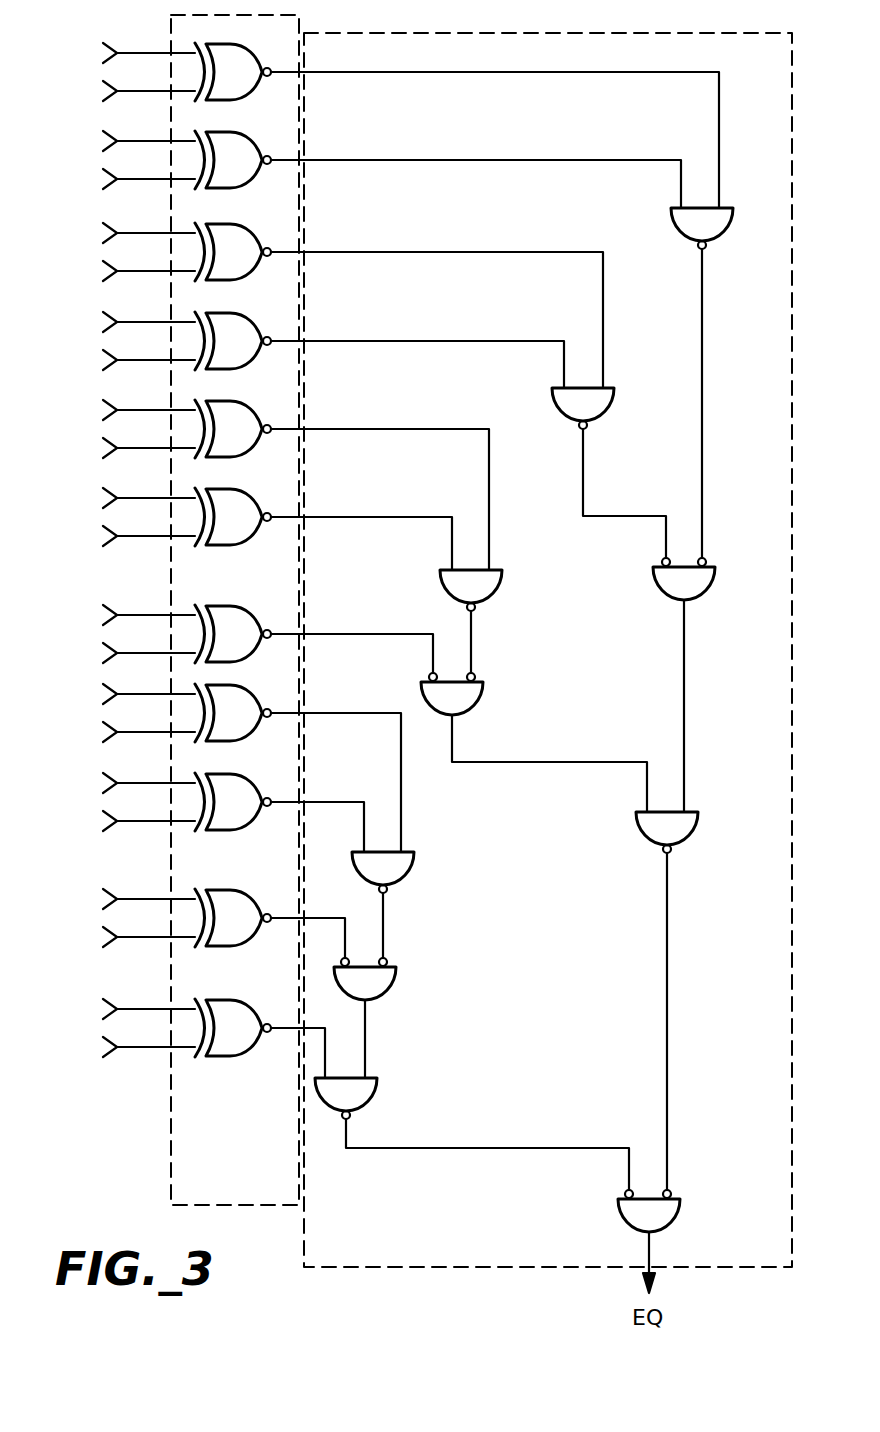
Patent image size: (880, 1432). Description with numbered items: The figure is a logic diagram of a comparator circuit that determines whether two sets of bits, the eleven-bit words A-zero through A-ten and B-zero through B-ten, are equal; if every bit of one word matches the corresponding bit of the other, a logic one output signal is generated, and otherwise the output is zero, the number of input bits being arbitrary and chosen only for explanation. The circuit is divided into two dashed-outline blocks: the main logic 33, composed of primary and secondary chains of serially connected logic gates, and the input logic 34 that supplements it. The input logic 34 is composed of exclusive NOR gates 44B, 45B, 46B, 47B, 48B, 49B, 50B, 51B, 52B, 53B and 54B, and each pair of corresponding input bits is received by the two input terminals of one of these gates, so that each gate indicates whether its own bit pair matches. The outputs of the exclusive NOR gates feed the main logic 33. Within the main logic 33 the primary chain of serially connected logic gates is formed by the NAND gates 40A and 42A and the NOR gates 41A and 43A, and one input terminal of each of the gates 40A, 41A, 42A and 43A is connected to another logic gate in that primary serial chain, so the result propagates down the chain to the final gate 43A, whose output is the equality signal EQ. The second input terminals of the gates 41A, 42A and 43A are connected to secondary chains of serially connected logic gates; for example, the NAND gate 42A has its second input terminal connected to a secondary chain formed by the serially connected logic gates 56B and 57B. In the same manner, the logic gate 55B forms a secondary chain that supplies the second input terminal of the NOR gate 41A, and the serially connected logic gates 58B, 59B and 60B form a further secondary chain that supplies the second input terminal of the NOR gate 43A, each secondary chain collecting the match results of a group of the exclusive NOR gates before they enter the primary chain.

The main logic 33 is at (720, 1268).
The input logic 34 is at (168, 38).
The exclusive NOR gate 44B is at (394, 124).
The exclusive NOR gate 45B is at (375, 172).
The exclusive NOR gate 46B is at (336, 304).
The exclusive NOR gate 47B is at (317, 353).
The exclusive NOR gate 48B is at (279, 484).
The exclusive NOR gate 49B is at (261, 529).
The exclusive NOR gate 50B is at (251, 646).
The exclusive NOR gate 51B is at (235, 767).
The exclusive NOR gate 52B is at (217, 814).
The exclusive NOR gate 53B is at (207, 930).
The exclusive NOR gate 54B is at (190, 1040).
The NAND gate 40A is at (727, 383).
The NOR gate 41A is at (715, 685).
The NAND gate 42A is at (703, 1001).
The NOR gate 43A is at (685, 1241).
The logic gate 55B is at (617, 473).
The logic gate 56B is at (504, 621).
The logic gate 57B is at (534, 742).
The logic gate 58B is at (417, 905).
The logic gate 59B is at (399, 1018).
The logic gate 60B is at (472, 1134).